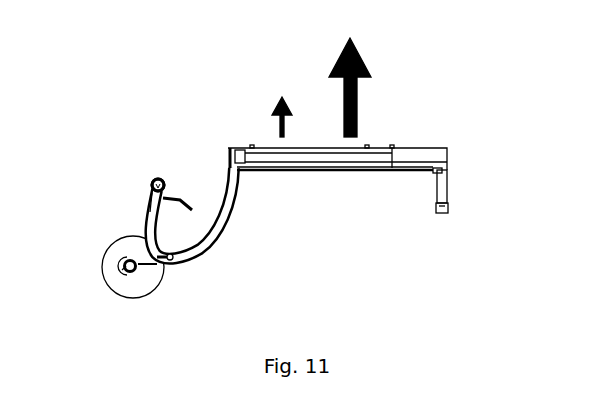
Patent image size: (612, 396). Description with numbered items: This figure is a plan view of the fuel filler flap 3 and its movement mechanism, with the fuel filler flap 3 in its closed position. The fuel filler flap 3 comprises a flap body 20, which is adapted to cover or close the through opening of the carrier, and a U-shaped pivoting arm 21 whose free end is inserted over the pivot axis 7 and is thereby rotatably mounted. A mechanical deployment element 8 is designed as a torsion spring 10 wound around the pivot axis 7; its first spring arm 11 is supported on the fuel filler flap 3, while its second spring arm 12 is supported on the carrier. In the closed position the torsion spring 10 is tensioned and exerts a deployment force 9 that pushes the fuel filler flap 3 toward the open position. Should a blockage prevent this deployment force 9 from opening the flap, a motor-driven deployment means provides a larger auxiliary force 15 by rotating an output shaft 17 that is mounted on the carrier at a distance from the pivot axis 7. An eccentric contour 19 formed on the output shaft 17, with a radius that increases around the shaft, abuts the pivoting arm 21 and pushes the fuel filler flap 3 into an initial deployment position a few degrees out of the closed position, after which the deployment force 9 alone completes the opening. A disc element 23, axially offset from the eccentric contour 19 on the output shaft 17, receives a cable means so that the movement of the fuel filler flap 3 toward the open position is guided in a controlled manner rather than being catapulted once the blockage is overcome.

The fuel filler flap 3 is at (435, 140).
The pivot axis 7 is at (158, 177).
The mechanical deployment element 8 is at (174, 181).
The deployment force 9 is at (285, 127).
The torsion spring 10 is at (151, 182).
The first spring arm 11 is at (152, 196).
The second spring arm 12 is at (188, 206).
The auxiliary force 15 is at (352, 98).
The output shaft 17 is at (124, 262).
The eccentric contour 19 is at (119, 271).
The flap body 20 is at (402, 160).
The pivoting arm 21 is at (218, 237).
The disc element 23 is at (137, 298).